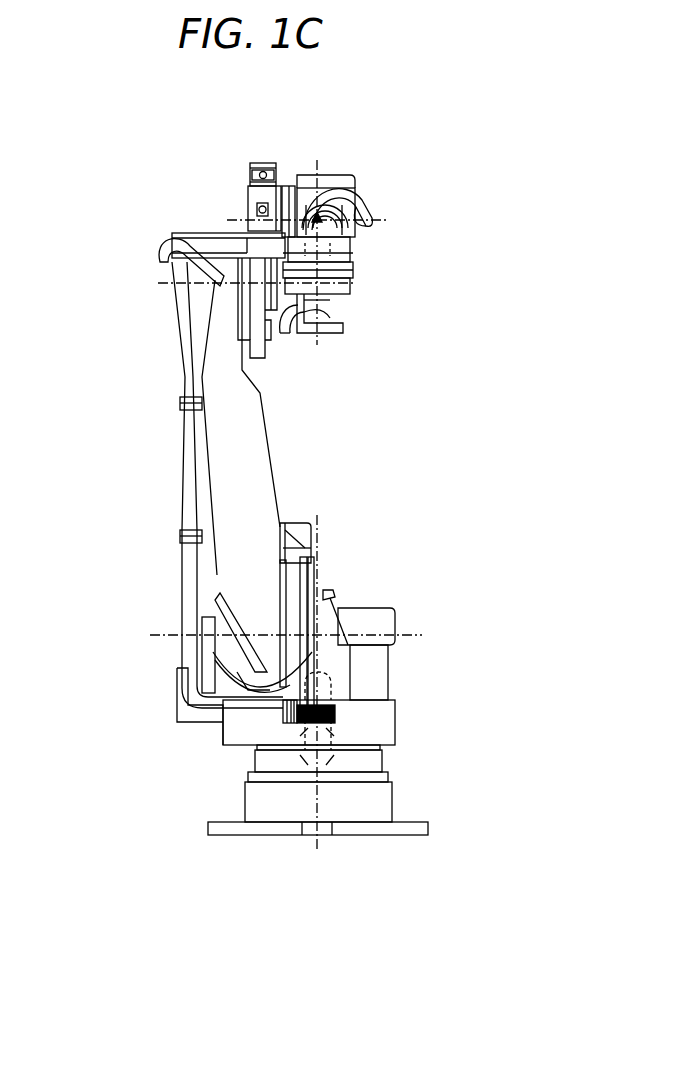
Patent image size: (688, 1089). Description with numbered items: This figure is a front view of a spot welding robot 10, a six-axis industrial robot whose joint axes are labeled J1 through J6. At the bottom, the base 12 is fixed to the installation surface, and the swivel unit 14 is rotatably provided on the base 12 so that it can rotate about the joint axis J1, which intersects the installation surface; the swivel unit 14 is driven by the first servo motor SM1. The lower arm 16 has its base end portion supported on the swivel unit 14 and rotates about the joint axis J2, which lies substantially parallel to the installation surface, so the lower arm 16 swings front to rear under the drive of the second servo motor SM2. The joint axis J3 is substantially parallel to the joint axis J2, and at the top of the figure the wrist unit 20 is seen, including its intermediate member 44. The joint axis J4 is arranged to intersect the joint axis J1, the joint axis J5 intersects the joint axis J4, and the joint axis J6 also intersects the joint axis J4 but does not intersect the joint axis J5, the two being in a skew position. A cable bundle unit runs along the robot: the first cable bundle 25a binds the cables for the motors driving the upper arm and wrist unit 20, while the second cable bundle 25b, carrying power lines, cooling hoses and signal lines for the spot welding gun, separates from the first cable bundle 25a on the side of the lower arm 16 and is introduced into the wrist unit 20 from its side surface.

The spot welding robot 10 is at (112, 160).
The base 12 is at (378, 800).
The swivel unit 14 is at (337, 597).
The lower arm 16 is at (250, 435).
The wrist unit 20 is at (368, 310).
The first cable bundle 25a is at (186, 327).
The second cable bundle 25b is at (356, 200).
The intermediate member 44 is at (333, 335).
The joint axis J1 is at (318, 668).
The joint axis J2 is at (302, 638).
The joint axis J3 is at (234, 286).
The joint axis J4 is at (343, 253).
The joint axis J5 is at (324, 222).
The joint axis J6 is at (317, 237).
The first servo motor SM1 is at (383, 690).
The second servo motor SM2 is at (378, 618).